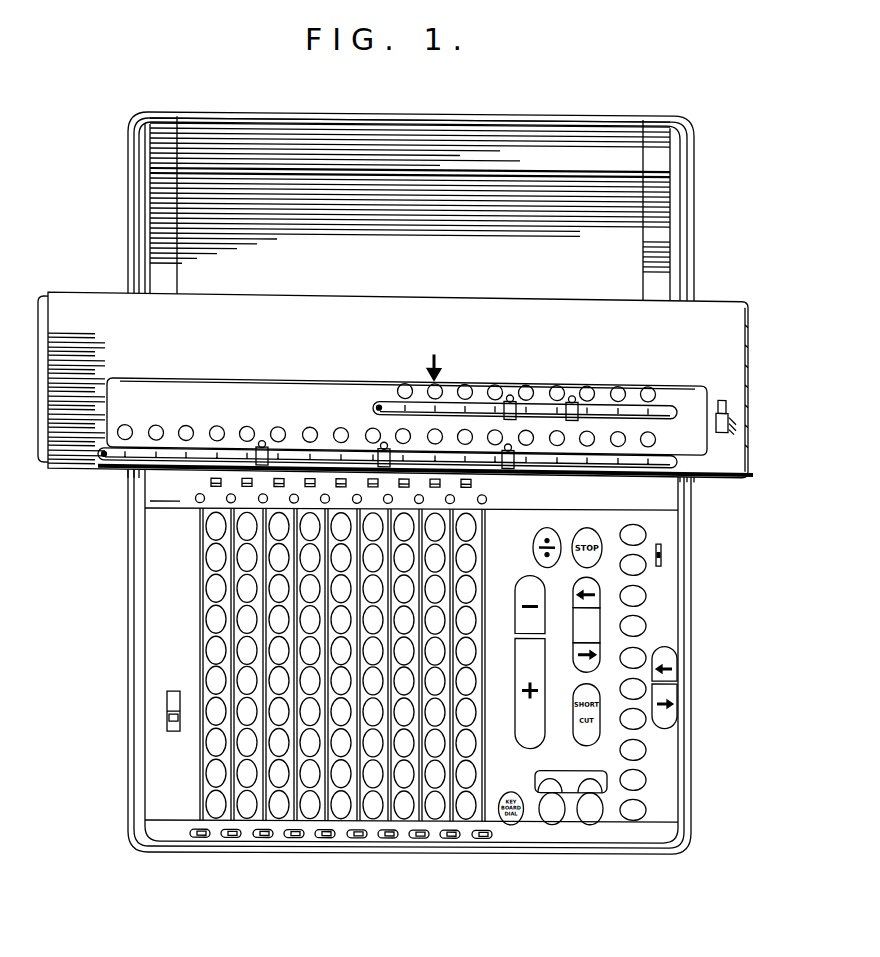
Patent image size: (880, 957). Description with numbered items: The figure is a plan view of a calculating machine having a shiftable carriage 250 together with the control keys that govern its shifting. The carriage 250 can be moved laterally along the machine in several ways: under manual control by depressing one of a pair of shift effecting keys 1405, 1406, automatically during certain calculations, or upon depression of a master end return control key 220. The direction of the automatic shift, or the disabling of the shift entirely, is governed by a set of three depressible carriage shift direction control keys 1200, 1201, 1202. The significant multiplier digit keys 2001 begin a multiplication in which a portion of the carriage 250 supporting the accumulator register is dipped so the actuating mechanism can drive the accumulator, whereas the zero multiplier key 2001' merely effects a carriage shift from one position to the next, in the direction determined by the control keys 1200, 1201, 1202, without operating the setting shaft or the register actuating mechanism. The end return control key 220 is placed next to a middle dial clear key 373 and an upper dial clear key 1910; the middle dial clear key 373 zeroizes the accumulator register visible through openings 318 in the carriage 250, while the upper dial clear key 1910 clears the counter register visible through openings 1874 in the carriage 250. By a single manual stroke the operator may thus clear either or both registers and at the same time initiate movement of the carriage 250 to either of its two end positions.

The carriage 250 is at (395, 370).
The openings 1874 is at (624, 365).
The openings 318 is at (293, 415).
The carriage shift direction control key 1201 is at (600, 589).
The carriage shift direction control key 1200 is at (600, 620).
The carriage shift direction control key 1202 is at (598, 648).
The shift effecting key 1406 is at (677, 670).
The shift effecting key 1405 is at (677, 696).
The keys 2001 is at (679, 657).
The zero multiplier key 2001' is at (685, 810).
The middle dial clear key 373 is at (553, 824).
The upper dial clear key 1910 is at (588, 824).
The end return control key 220 is at (606, 791).